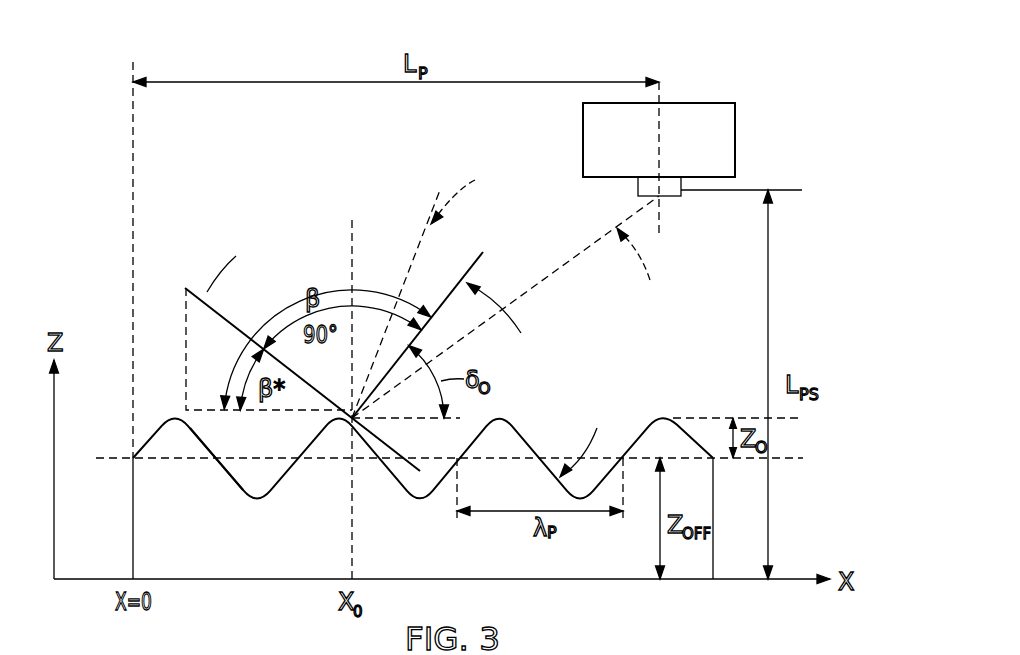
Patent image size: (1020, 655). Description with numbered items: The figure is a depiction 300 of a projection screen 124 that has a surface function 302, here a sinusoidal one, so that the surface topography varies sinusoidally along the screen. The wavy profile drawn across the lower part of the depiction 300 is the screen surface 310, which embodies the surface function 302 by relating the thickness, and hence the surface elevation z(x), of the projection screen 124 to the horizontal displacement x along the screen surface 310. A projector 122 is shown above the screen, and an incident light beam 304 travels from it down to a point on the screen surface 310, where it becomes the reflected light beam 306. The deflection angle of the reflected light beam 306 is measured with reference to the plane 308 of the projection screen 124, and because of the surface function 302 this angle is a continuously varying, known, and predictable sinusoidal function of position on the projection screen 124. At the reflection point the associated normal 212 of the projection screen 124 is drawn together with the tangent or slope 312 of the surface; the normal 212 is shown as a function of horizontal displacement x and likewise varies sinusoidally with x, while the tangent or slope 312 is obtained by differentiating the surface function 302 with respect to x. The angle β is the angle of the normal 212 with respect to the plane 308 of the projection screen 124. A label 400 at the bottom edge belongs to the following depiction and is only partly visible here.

The depiction 300 is at (150, 54).
The projector 122 is at (690, 103).
The tangent or slope 312 is at (205, 295).
The reflected light beam 306 is at (407, 275).
The normal 212 is at (477, 260).
The incident light beam 304 is at (522, 296).
The surface function 302 is at (223, 479).
The screen surface 310 is at (213, 450).
The plane of the projection screen 308 is at (783, 458).
The projection screen 124 is at (697, 495).
The configuration (next figure) 400 is at (125, 654).